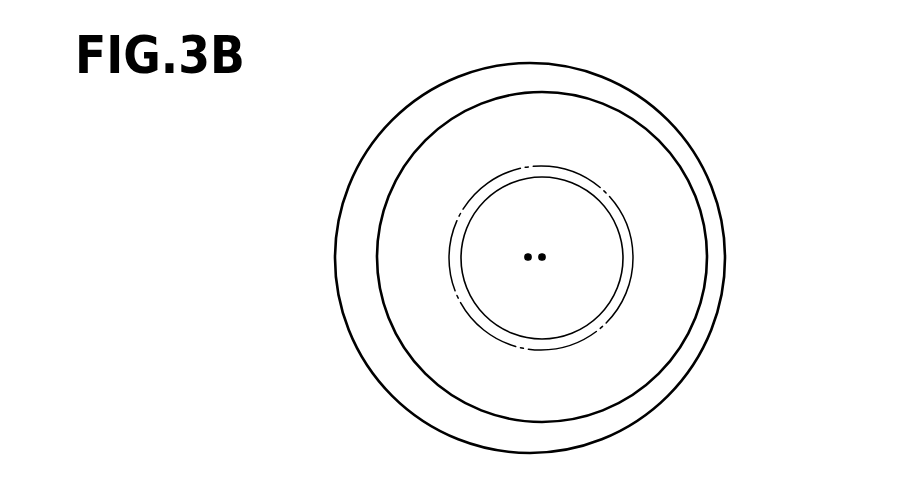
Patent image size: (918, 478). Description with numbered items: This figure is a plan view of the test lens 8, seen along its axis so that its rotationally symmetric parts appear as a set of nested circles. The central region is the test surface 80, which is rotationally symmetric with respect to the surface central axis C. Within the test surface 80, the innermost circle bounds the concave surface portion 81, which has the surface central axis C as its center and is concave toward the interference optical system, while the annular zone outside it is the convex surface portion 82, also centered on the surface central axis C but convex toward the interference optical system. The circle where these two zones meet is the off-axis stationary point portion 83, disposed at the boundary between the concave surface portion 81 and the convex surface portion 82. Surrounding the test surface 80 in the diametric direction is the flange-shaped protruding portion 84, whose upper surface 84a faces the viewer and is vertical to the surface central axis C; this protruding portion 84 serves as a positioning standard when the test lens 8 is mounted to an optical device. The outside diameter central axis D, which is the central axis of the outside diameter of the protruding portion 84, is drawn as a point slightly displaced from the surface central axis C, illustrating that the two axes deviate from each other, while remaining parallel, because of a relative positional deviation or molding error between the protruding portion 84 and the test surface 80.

The test lens 8 is at (564, 237).
The test surface 80 is at (586, 113).
The concave surface portion 81 is at (501, 222).
The convex surface portion 82 is at (580, 222).
The off-axis stationary point portion 83 is at (583, 187).
The flange-shaped protruding portion 84 is at (713, 353).
The upper surface 84a is at (564, 237).
The outside diameter central axis D is at (525, 258).
The surface central axis C is at (545, 258).